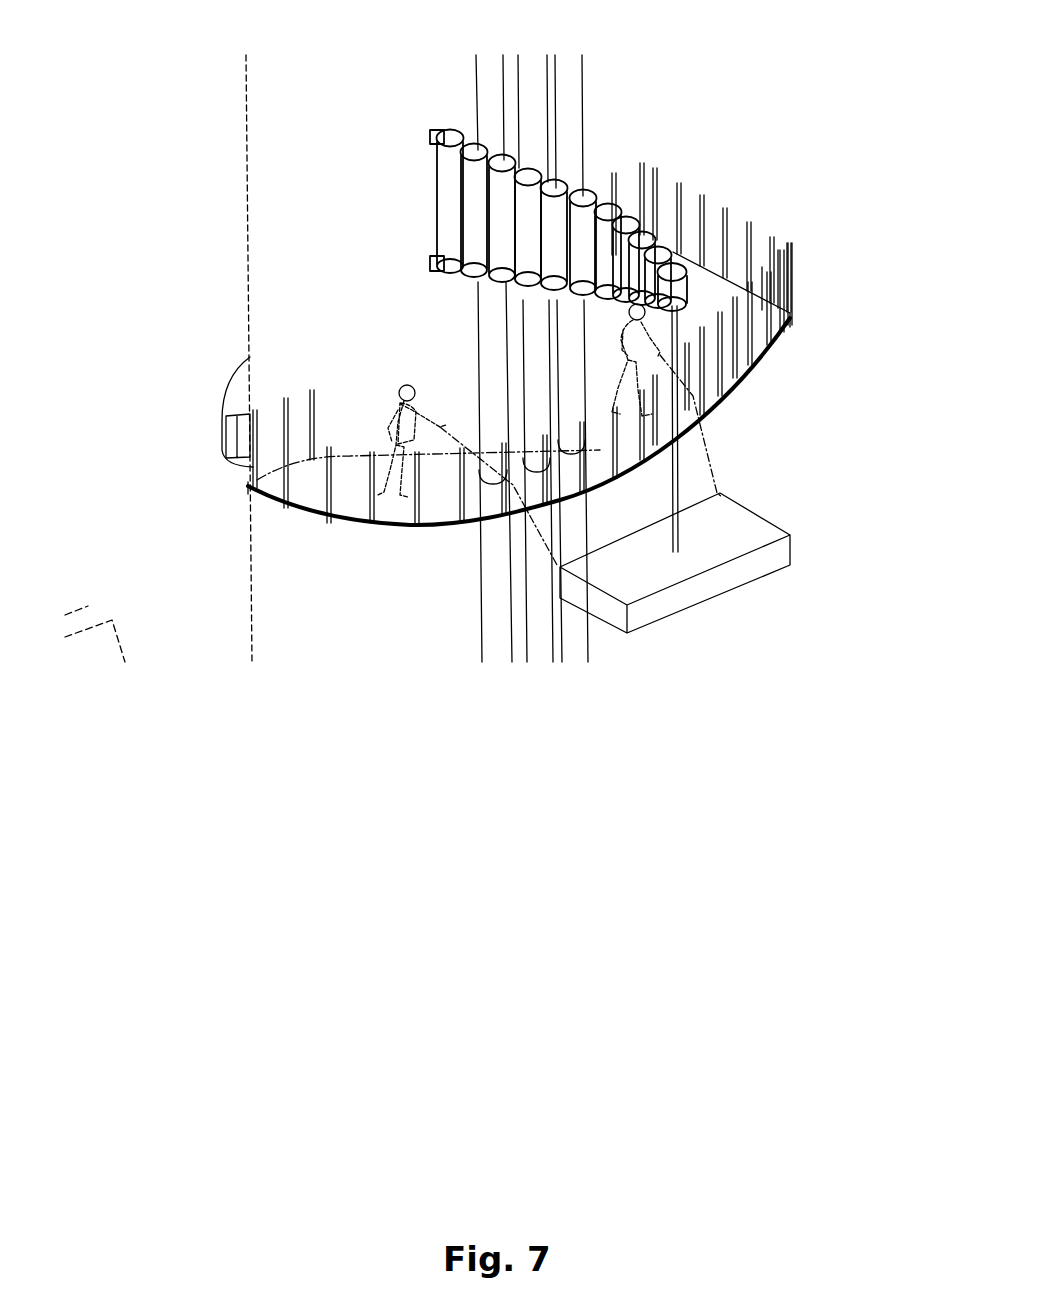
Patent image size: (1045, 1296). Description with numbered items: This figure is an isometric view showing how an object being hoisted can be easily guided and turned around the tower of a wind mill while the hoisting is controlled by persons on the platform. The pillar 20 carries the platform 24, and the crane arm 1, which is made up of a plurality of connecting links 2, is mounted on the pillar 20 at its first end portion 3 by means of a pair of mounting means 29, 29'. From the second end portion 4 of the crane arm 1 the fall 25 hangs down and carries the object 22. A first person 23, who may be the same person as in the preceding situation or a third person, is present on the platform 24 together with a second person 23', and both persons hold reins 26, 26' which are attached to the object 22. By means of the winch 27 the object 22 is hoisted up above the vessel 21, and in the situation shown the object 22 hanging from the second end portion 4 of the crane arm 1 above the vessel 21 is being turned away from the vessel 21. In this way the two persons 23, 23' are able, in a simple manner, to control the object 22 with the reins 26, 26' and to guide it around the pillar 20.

The crane arm 1 is at (567, 270).
The connecting links 2 is at (585, 230).
The first end portion 3 is at (611, 198).
The second end portion 4 is at (683, 183).
The pillar 20 is at (342, 137).
The vessel 21 is at (90, 617).
The object 22 is at (678, 590).
The first person 23 is at (376, 424).
The second person 23' is at (726, 361).
The platform 24 is at (772, 264).
The fall 25 is at (672, 462).
The rein 26 is at (478, 525).
The rein 26' is at (740, 426).
The winch 27 is at (680, 296).
The mounting means 29 is at (393, 161).
The mounting means 29' is at (389, 246).